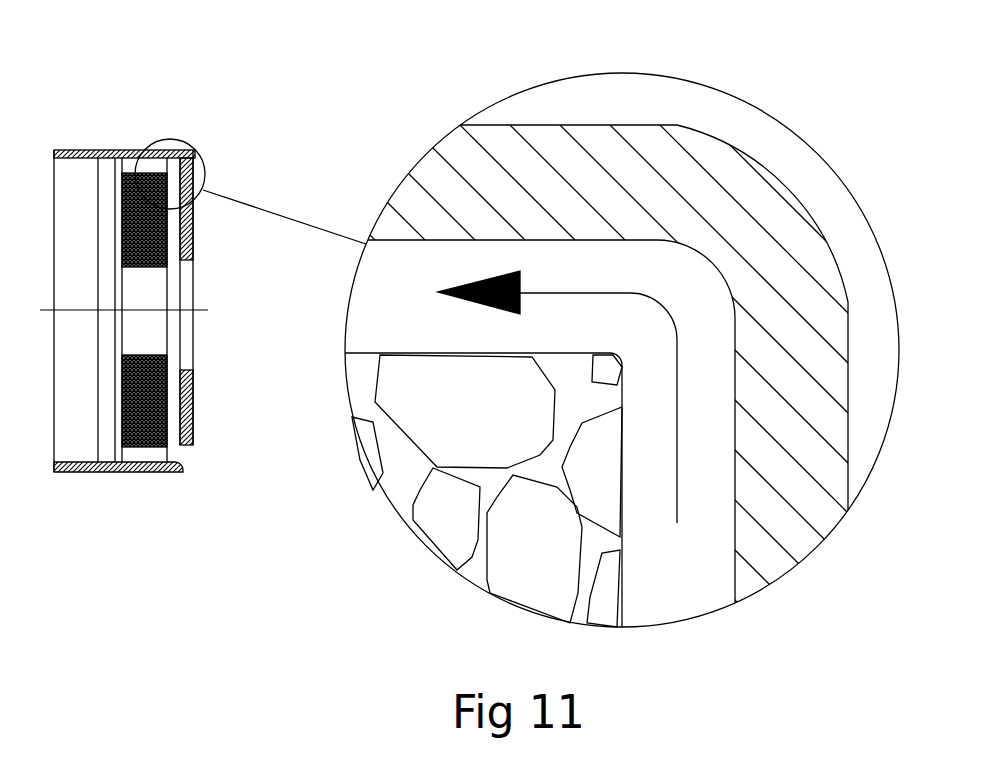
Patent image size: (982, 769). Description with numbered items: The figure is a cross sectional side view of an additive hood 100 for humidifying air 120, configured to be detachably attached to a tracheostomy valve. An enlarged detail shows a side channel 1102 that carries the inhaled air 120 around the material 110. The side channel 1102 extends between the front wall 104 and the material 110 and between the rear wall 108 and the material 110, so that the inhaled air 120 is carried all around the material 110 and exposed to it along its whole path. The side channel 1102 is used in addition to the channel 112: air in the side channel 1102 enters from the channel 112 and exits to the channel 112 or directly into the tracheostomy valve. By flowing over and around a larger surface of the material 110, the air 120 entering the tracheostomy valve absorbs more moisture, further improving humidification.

The additive hood 100 is at (192, 119).
The front wall 104 is at (218, 412).
The rear wall 108 is at (68, 222).
The material 110 is at (418, 437).
The channel 112 is at (211, 352).
The inhaled air 120 is at (692, 350).
The side channel 1102 is at (147, 167).